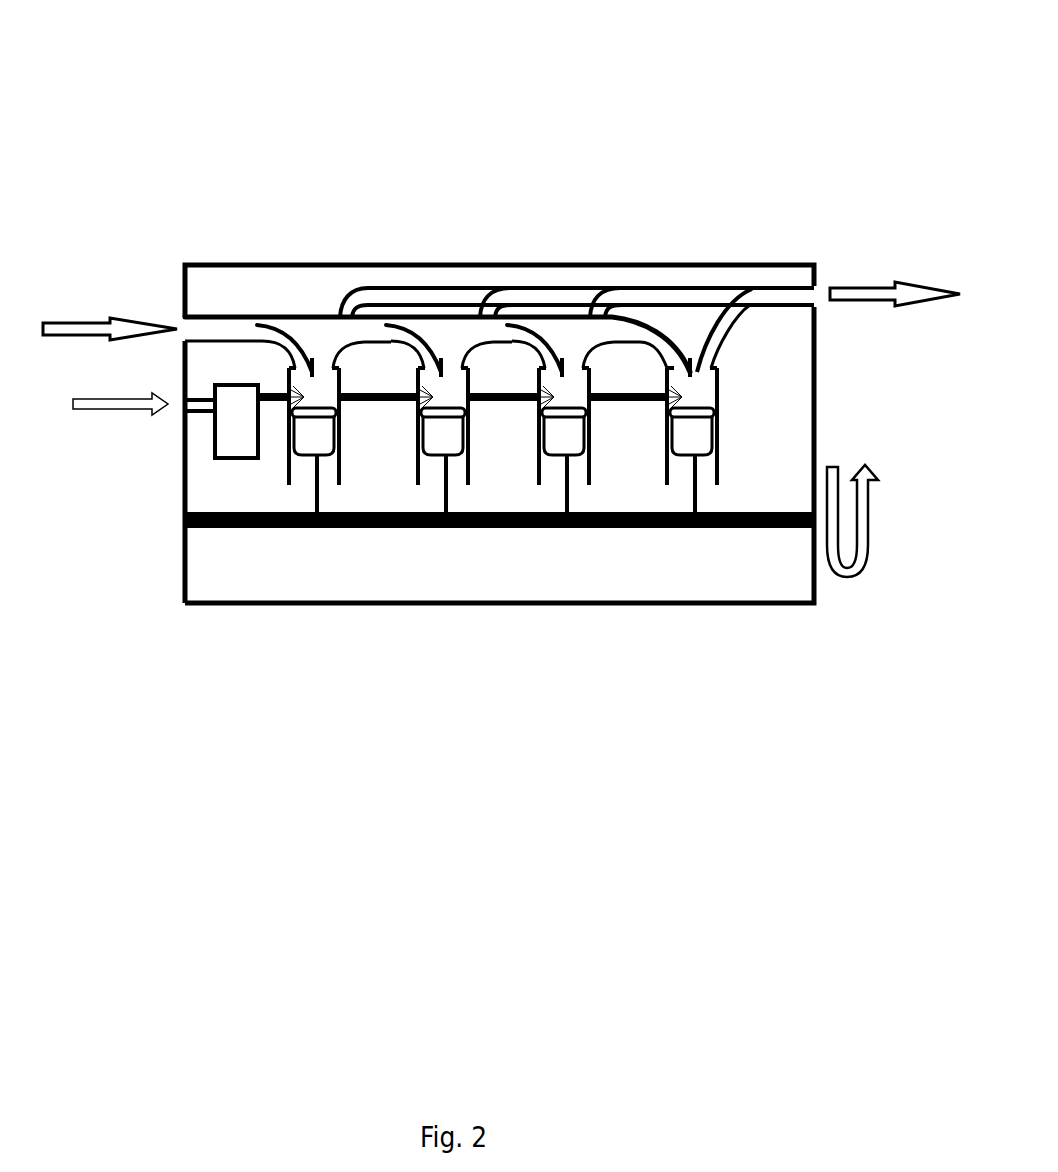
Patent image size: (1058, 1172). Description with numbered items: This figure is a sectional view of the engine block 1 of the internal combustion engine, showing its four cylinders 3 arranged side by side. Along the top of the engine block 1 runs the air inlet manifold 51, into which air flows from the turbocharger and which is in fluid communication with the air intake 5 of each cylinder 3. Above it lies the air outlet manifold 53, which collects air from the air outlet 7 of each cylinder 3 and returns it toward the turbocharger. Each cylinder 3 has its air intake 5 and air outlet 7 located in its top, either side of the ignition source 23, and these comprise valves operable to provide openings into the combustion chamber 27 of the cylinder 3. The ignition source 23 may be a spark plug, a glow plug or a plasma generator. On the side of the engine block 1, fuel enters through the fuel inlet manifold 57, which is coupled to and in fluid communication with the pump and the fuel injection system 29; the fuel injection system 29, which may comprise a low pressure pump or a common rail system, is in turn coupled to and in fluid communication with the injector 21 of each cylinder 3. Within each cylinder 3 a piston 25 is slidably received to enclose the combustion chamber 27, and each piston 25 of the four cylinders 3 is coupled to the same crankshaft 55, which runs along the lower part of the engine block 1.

The engine block 1 is at (290, 84).
The cylinder 3 is at (722, 392).
The air intake 5 is at (665, 362).
The air outlet 7 is at (720, 368).
The injector 21 is at (417, 397).
The ignition source 23 is at (692, 368).
The piston 25 is at (443, 442).
The combustion chamber 27 is at (697, 390).
The fuel injection system 29 is at (215, 430).
The air inlet manifold 51 is at (187, 325).
The air outlet manifold 53 is at (818, 282).
The crankshaft 55 is at (768, 527).
The fuel inlet manifold 57 is at (183, 413).